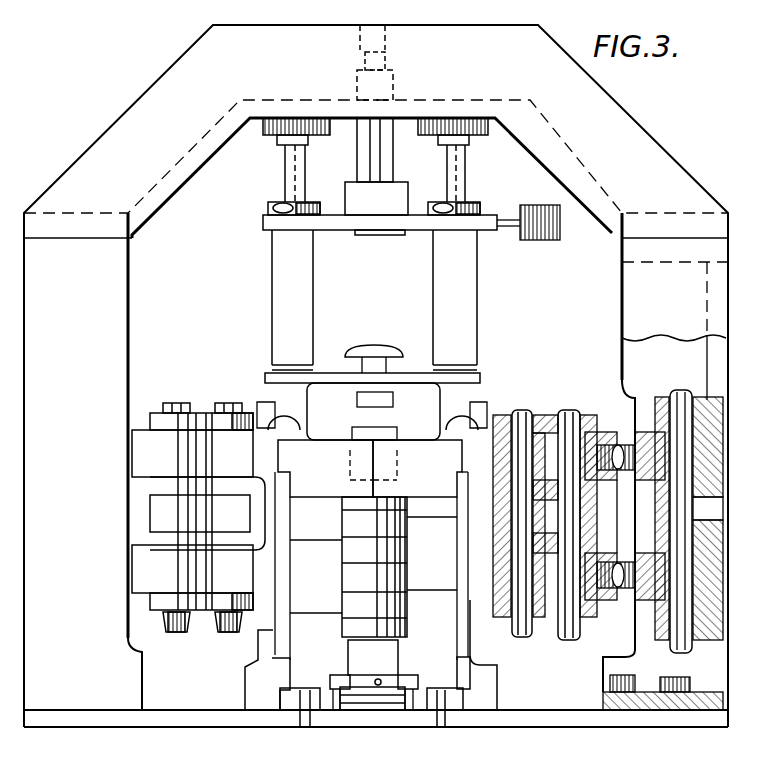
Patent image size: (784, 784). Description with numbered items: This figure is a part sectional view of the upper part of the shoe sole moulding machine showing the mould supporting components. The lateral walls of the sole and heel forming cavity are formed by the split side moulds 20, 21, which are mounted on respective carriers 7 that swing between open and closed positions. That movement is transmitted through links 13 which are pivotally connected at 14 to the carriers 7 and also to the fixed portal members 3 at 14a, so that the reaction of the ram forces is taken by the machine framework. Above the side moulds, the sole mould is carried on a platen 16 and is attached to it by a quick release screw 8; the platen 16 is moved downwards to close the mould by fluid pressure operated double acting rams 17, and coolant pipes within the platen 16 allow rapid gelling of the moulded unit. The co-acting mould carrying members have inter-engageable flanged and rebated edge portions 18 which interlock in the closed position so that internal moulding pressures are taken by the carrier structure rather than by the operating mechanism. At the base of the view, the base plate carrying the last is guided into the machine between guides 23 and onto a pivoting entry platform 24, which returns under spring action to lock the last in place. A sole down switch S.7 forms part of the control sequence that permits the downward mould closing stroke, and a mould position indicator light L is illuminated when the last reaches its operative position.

The portal members 3 is at (168, 156).
The sole down switch S.7 is at (535, 236).
The double acting rams 17 is at (440, 262).
The quick release screw 8 is at (364, 347).
The platen 16 is at (418, 388).
The mould position indicator light L is at (385, 401).
The flanged and rebated edge portions 18 is at (284, 414).
The split side mould 20 is at (337, 485).
The split side mould 21 is at (428, 490).
The carriers 7 is at (265, 628).
The guides 23 is at (335, 712).
The platform 24 is at (372, 708).
The links 13 is at (173, 405).
The pivot 14 is at (226, 405).
The pivot 14a is at (680, 645).